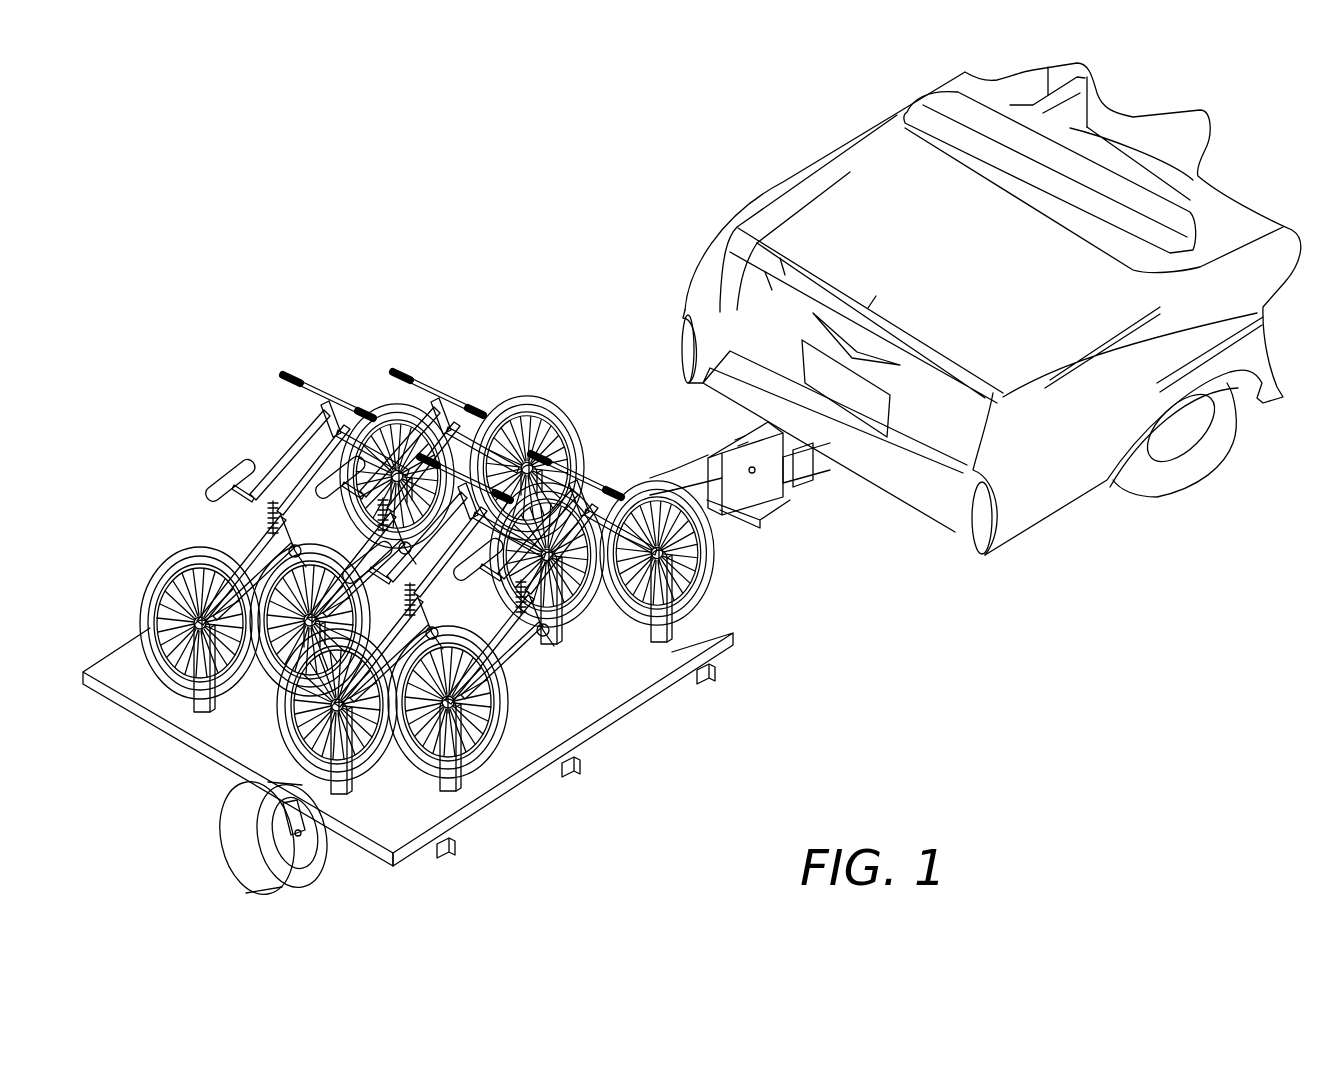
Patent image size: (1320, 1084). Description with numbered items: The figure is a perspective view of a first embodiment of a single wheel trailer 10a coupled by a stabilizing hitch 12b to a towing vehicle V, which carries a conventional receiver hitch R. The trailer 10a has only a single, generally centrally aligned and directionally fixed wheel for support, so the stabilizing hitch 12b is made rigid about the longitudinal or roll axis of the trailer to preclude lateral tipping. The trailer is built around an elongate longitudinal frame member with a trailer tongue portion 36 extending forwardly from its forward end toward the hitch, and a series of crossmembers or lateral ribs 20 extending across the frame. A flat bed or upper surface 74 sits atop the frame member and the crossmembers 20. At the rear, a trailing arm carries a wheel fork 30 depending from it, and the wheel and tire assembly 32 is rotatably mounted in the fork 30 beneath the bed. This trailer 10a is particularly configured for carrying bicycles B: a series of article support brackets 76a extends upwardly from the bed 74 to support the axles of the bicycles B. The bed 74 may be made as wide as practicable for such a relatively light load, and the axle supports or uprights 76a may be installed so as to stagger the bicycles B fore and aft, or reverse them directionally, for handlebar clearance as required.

The single wheel trailer 10a is at (608, 826).
The stabilizing hitch 12b is at (806, 550).
The lateral ribs 20 is at (715, 678).
The wheel fork 30 is at (305, 828).
The wheel and tire assembly 32 is at (222, 840).
The trailer tongue portion 36 is at (697, 472).
The flat bed 74 is at (567, 716).
The article support brackets 76a is at (662, 612).
The bicycles B is at (294, 376).
The towing vehicle V is at (780, 183).
The receiver hitch R is at (827, 472).